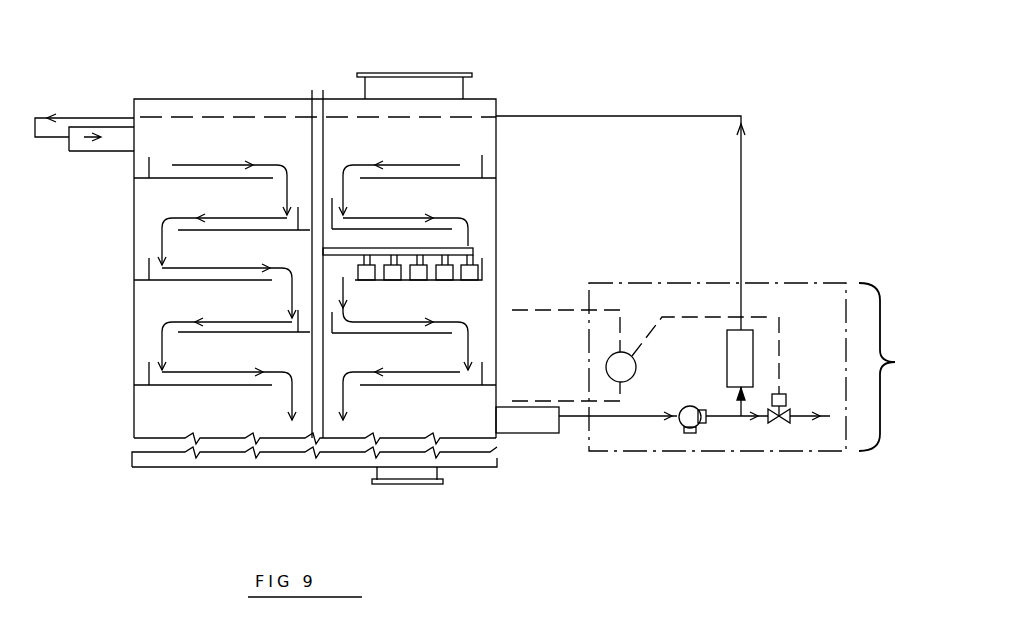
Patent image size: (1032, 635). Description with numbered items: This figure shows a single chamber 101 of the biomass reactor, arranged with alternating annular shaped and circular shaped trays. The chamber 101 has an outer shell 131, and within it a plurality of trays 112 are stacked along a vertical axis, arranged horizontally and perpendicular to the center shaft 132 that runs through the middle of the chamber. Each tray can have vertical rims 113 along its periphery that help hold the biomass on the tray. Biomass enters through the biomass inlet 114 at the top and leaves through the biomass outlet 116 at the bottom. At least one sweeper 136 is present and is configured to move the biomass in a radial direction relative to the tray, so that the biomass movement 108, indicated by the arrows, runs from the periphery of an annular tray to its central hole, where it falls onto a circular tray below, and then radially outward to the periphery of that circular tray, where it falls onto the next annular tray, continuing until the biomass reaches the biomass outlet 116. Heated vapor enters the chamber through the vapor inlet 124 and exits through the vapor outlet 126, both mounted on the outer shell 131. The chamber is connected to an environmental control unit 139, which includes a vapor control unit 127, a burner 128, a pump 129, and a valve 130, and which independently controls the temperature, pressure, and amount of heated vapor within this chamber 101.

The chamber 101 is at (521, 82).
The biomass movement 108 is at (160, 242).
The trays 112 is at (160, 177).
The rims 113 is at (153, 152).
The biomass inlet 114 is at (390, 85).
The biomass outlet 116 is at (427, 473).
The vapor inlet 124 is at (110, 137).
The vapor outlet 126 is at (520, 428).
The vapor control unit 127 is at (730, 452).
The burner 128 is at (727, 360).
The pump 129 is at (690, 406).
The valve 130 is at (780, 421).
The outer shell 131 is at (133, 306).
The center shaft 132 is at (316, 90).
The sweepers 136 is at (460, 252).
The environmental control unit 139 is at (898, 367).